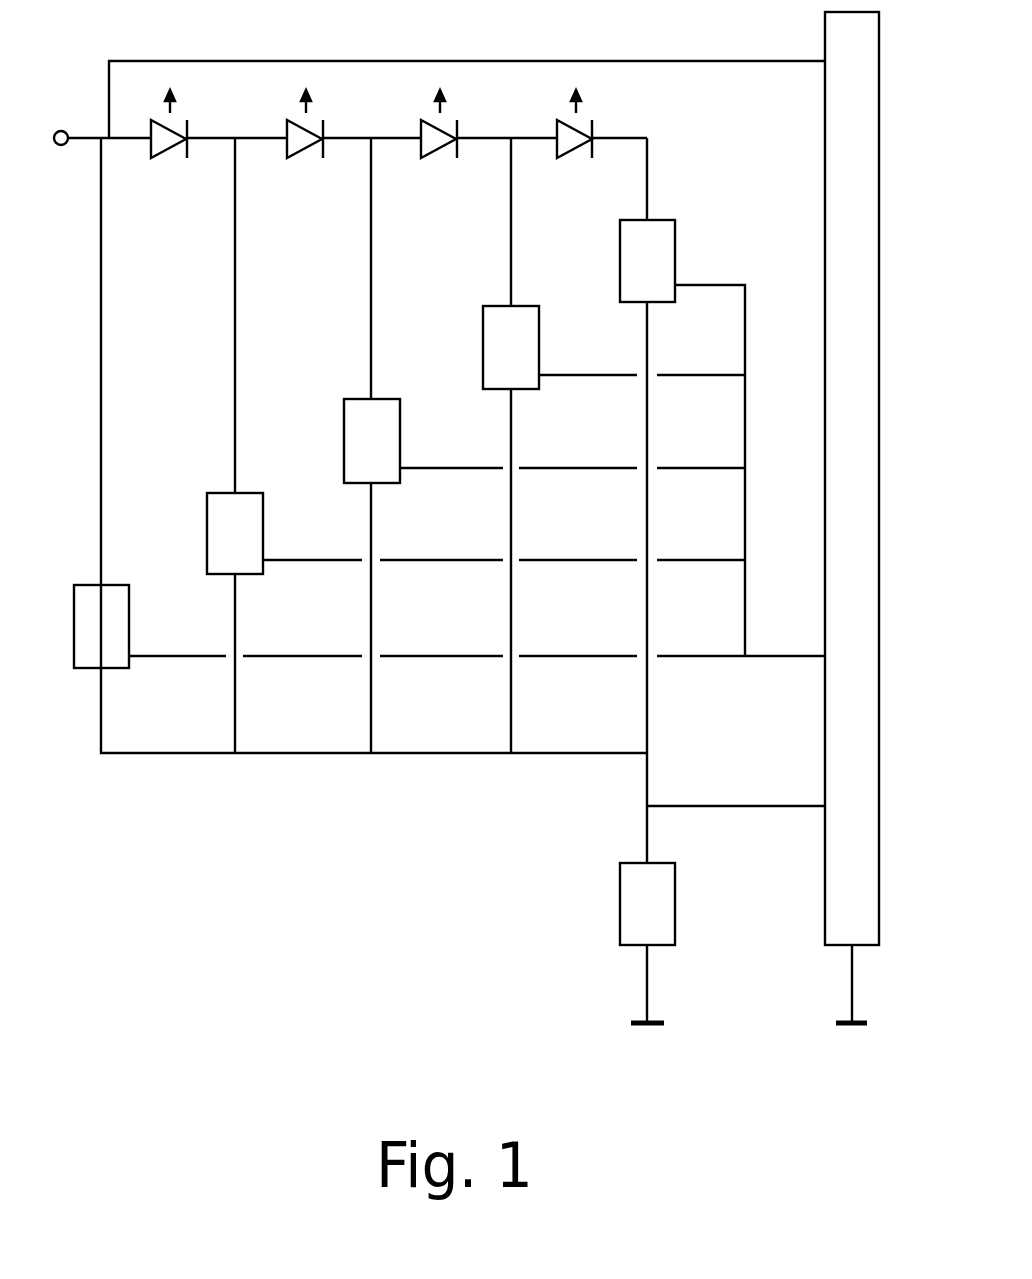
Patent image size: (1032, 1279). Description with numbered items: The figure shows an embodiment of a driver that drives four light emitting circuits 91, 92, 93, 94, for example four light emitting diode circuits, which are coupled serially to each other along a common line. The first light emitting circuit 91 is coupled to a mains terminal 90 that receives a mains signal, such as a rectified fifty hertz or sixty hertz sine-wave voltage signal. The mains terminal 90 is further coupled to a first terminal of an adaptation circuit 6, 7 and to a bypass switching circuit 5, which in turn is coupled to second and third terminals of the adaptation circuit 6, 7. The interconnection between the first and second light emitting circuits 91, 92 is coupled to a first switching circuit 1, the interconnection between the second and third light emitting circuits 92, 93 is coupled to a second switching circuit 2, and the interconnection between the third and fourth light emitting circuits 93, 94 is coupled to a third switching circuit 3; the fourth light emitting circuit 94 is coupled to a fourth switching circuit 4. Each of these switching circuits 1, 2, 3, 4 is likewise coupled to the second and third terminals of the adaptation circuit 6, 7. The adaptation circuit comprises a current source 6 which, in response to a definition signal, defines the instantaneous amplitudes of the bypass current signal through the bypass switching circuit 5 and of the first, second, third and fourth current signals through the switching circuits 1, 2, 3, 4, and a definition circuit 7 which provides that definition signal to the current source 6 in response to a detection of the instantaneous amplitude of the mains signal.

The first switching circuit 1 is at (251, 533).
The second switching circuit 2 is at (385, 441).
The third switching circuit 3 is at (525, 347).
The fourth switching circuit 4 is at (661, 261).
The bypass switching circuit 5 is at (116, 626).
The current source 6 is at (661, 904).
The definition circuit 7 is at (836, 478).
The mains terminal 90 is at (64, 166).
The first light emitting circuit 91 is at (169, 145).
The second light emitting circuit 92 is at (305, 145).
The third light emitting circuit 93 is at (439, 145).
The fourth light emitting circuit 94 is at (574, 145).